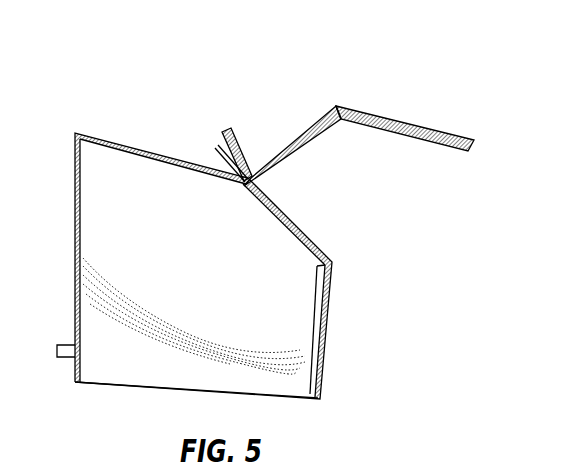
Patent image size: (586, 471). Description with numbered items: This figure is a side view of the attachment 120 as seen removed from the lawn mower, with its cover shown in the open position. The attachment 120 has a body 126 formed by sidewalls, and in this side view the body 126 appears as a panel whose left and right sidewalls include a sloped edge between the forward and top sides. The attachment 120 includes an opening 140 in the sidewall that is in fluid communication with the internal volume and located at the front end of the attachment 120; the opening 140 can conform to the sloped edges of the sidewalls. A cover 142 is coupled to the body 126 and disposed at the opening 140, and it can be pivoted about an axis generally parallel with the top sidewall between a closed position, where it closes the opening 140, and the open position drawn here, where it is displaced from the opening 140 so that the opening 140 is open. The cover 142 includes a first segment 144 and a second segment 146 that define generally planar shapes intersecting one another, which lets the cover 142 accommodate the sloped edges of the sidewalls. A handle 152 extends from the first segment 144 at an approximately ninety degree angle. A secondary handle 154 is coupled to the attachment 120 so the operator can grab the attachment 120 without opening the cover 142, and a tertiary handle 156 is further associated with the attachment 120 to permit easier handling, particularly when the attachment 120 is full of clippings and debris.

The attachment 120 is at (127, 172).
The body 126 is at (145, 367).
The opening 140 is at (359, 192).
The cover 142 is at (300, 133).
The first segment 144 is at (278, 167).
The second segment 146 is at (418, 130).
The handle 152 is at (232, 127).
The secondary handle 154 is at (214, 147).
The tertiary handle 156 is at (68, 344).